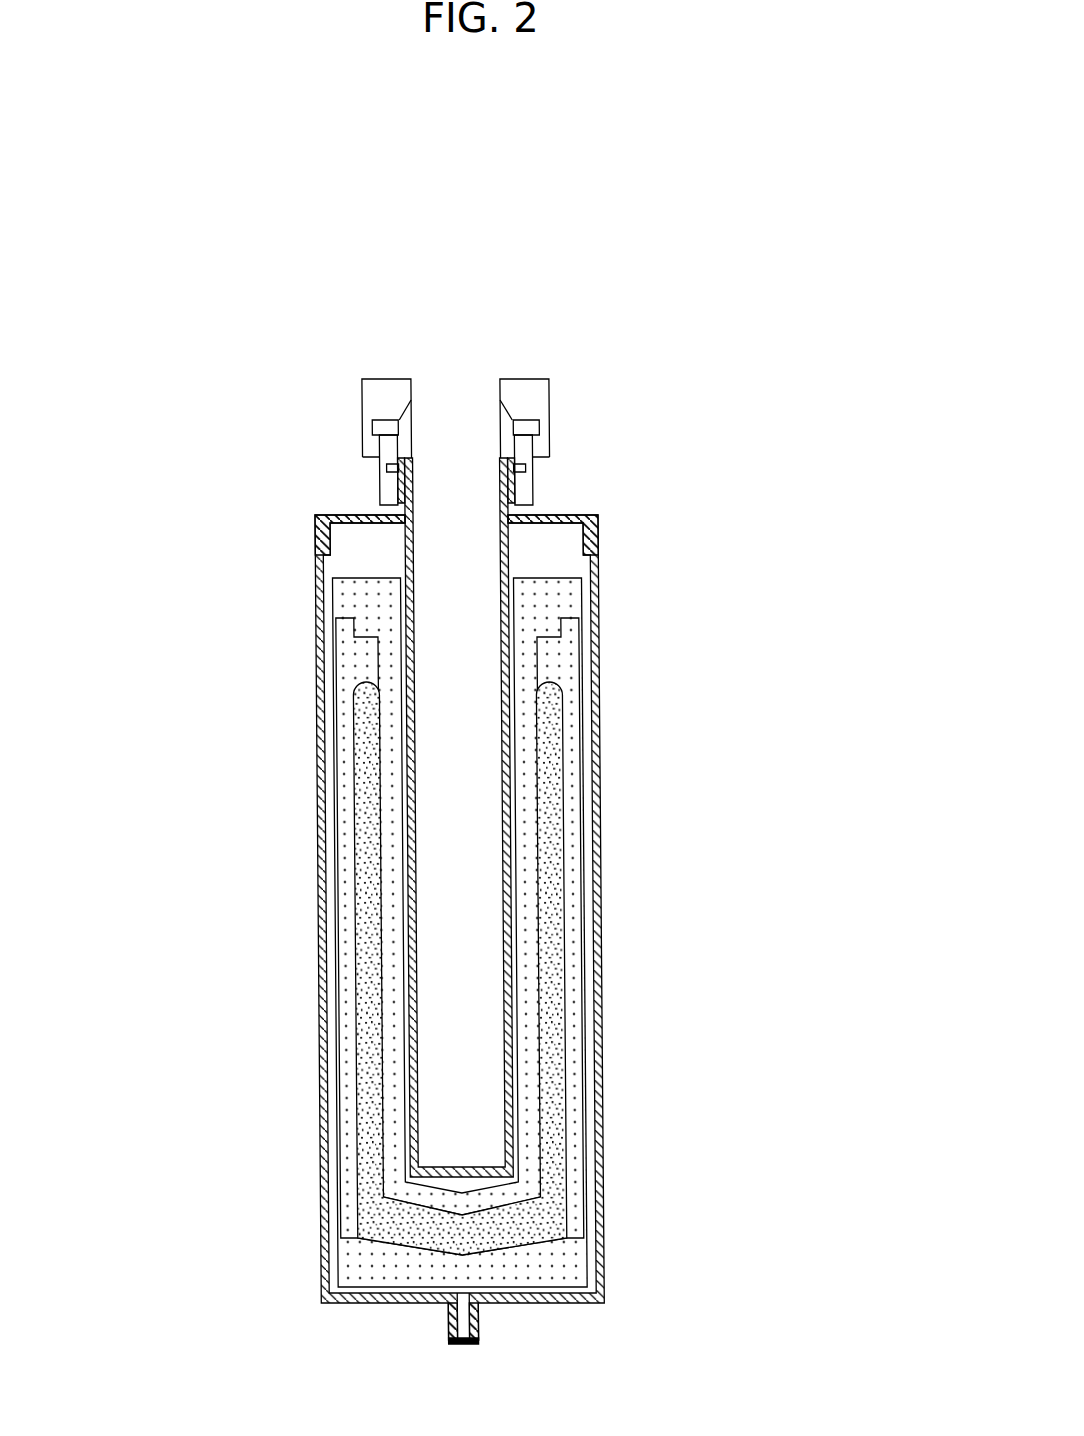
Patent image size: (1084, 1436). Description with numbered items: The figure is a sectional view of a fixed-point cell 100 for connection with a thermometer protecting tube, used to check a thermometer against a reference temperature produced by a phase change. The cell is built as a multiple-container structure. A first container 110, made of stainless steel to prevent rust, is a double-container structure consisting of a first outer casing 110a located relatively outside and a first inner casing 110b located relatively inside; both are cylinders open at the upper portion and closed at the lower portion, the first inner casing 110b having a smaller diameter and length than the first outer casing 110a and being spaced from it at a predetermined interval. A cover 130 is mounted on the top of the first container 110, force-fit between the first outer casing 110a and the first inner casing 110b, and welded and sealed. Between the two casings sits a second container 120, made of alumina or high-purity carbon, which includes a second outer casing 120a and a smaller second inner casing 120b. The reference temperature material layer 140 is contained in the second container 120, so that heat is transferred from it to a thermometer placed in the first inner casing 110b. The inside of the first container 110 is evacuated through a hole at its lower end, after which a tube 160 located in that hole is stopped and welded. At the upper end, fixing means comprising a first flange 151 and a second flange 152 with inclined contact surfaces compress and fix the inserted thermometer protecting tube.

The fixed-point cell 100 is at (263, 280).
The first container 110 is at (620, 899).
The first outer casing 110a is at (600, 952).
The first inner casing 110b is at (503, 1015).
The second container 120 is at (628, 932).
The second outer casing 120a is at (578, 678).
The second inner casing 120b is at (530, 750).
The cover 130 is at (560, 514).
The reference temperature material layer 140 is at (360, 1218).
The first flange 151 is at (382, 467).
The second flange 152 is at (378, 398).
The tube 160 is at (448, 1322).